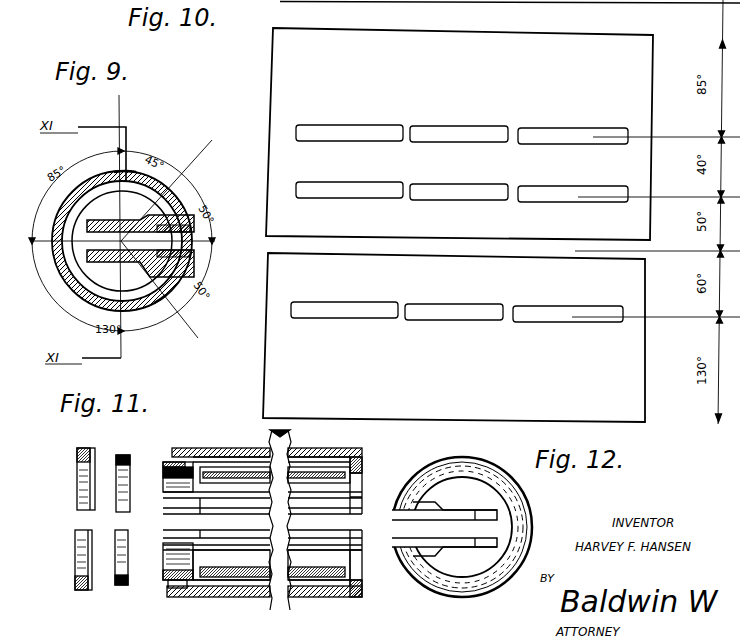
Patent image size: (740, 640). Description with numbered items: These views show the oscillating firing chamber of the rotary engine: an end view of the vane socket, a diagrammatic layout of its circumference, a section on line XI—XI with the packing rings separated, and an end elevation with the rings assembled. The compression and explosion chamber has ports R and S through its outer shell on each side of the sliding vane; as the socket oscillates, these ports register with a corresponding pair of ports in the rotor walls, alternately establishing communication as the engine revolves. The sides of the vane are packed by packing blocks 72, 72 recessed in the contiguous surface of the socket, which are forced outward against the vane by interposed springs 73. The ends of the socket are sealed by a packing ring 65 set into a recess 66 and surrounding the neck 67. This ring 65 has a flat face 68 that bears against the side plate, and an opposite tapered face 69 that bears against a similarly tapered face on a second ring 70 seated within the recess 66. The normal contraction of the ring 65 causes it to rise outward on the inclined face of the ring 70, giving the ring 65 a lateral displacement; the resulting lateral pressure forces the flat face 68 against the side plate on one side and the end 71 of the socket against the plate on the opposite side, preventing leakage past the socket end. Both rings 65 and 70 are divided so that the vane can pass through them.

In FIG. 9, the port R is at (133, 176).
In FIG. 10, the port R is at (466, 188).
In FIG. 11, the port R is at (233, 473).
In FIG. 9, the port S is at (173, 302).
In FIG. 10, the port S is at (486, 306).
In FIG. 11, the port S is at (228, 577).
In FIG. 11, the packing ring 65 is at (77, 497).
In FIG. 11, the recess 66 is at (177, 588).
In FIG. 11, the neck 67 is at (163, 580).
In FIG. 12, the neck 67 is at (447, 479).
In FIG. 11, the flat face 68 is at (77, 457).
In FIG. 12, the flat face 68 is at (449, 468).
In FIG. 11, the tapered face 69 is at (90, 463).
In FIG. 11, the ring 70 is at (128, 460).
In FIG. 11, the end of the socket 71 is at (363, 458).
In FIG. 9, the packing block 72 is at (192, 227).
In FIG. 9, the spring 73 is at (194, 218).